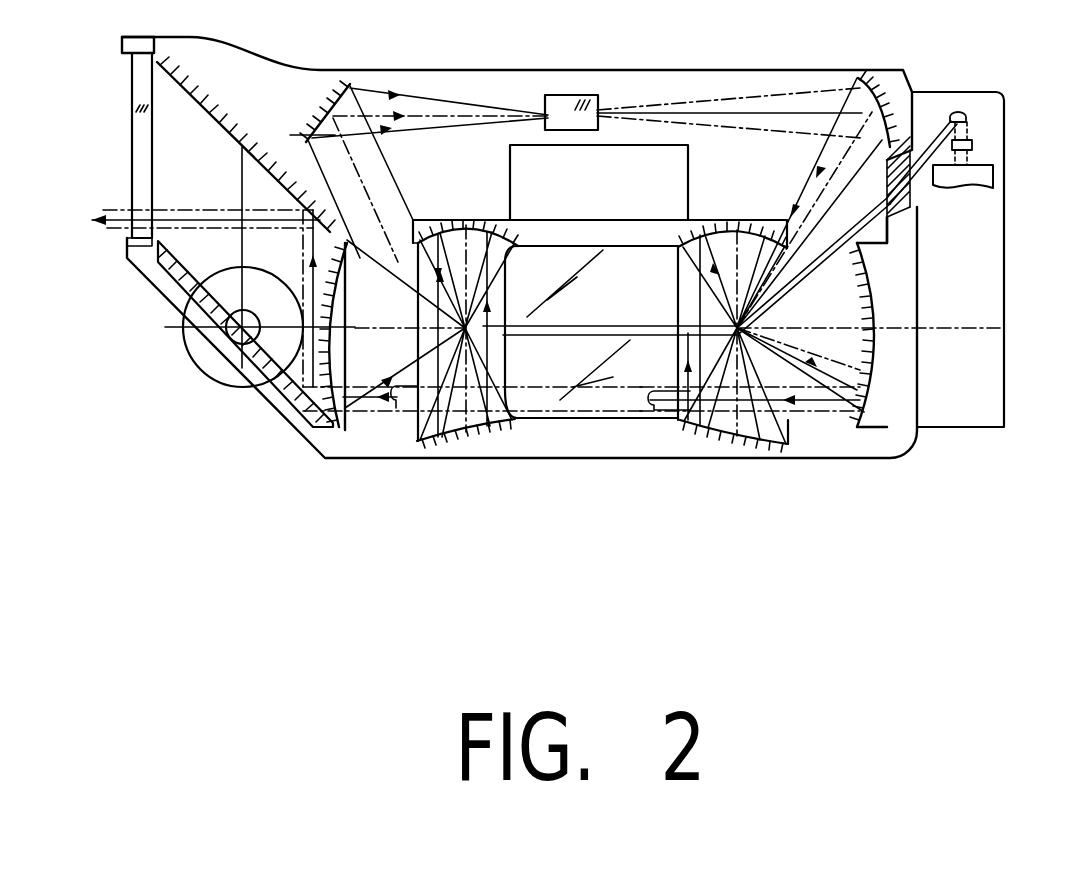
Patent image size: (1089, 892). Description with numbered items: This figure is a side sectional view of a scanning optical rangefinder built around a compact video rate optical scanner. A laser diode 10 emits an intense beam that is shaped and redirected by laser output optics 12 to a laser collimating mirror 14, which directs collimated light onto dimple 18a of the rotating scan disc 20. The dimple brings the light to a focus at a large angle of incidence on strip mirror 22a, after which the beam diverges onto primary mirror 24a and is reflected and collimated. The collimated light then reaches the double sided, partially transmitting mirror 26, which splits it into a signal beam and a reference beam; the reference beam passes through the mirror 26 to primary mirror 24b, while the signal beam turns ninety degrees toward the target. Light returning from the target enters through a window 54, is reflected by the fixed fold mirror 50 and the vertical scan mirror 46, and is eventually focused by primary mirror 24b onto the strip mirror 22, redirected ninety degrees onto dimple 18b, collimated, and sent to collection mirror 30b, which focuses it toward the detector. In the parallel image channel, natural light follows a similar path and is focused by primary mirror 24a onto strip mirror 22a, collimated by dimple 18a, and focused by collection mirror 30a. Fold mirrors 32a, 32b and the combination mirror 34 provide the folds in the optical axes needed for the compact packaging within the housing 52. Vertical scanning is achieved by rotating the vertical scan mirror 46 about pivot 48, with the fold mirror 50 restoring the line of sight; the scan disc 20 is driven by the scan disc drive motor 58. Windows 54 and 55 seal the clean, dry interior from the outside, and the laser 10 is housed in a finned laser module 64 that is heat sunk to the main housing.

The laser diode 10 is at (980, 178).
The laser output optics 12 is at (972, 145).
The laser collimating mirror 14 is at (684, 428).
The dimple 18a is at (720, 223).
The dimple 18b is at (433, 233).
The scan disc 20 is at (415, 220).
The strip mirror 22 is at (470, 315).
The strip mirror 22a is at (767, 225).
The primary mirror 24a is at (865, 428).
The primary mirror 24b is at (345, 430).
The double sided, partially transmitting mirror 26 is at (607, 392).
The collection mirror 30a is at (746, 446).
The collection mirror 30b is at (447, 444).
The fold mirror 32a is at (846, 100).
The fold mirror 32b is at (350, 83).
The combination mirror 34 is at (598, 104).
The vertical scan mirror 46 is at (170, 277).
The pivot 48 is at (227, 340).
The fold mirror 50 is at (226, 135).
The housing 52 is at (543, 70).
The window 54 is at (134, 95).
The window 55 is at (918, 196).
The scan disc drive motor 58 is at (518, 158).
The laser module 64 is at (1010, 357).